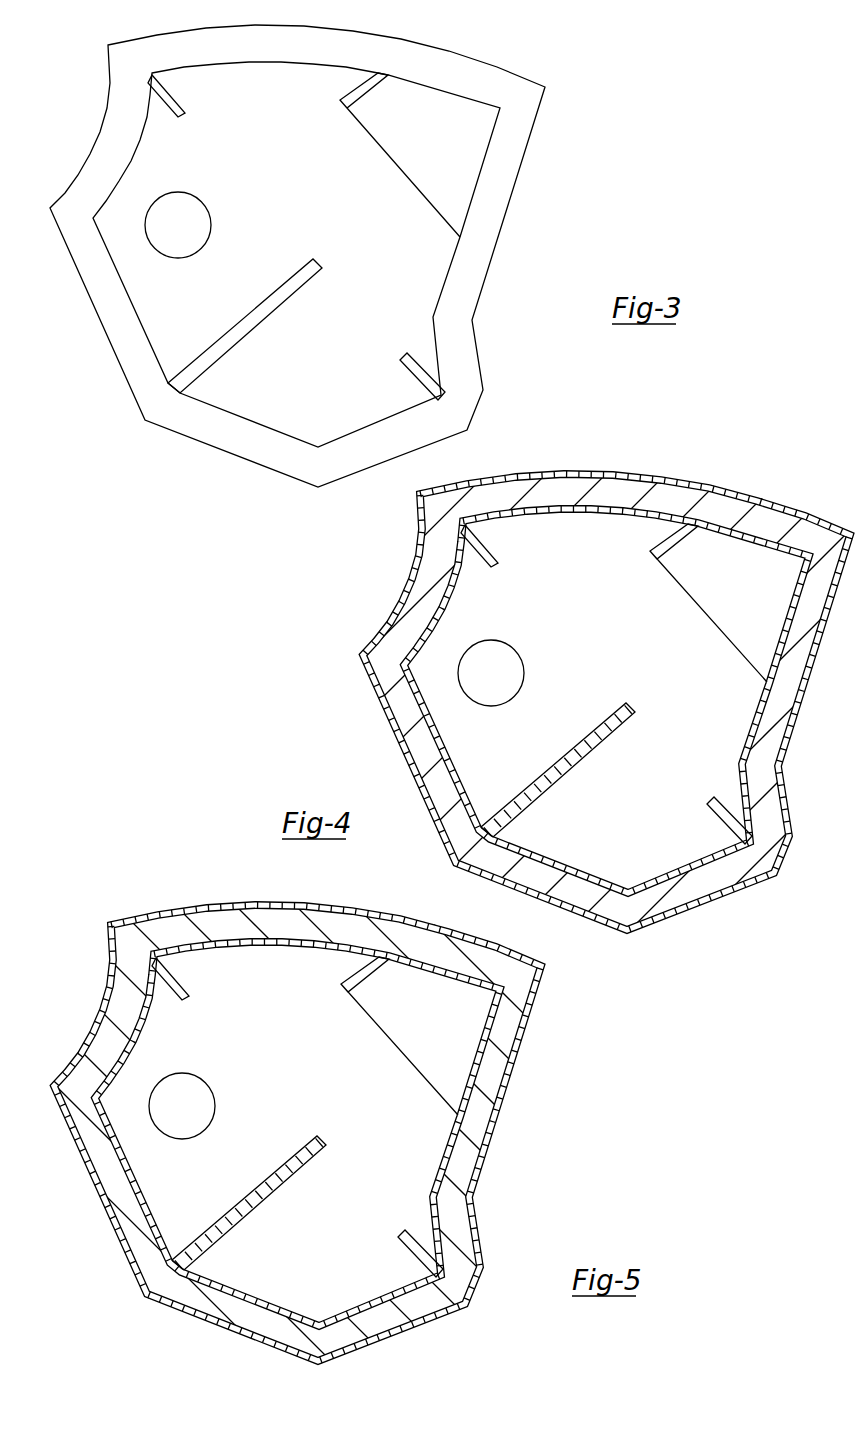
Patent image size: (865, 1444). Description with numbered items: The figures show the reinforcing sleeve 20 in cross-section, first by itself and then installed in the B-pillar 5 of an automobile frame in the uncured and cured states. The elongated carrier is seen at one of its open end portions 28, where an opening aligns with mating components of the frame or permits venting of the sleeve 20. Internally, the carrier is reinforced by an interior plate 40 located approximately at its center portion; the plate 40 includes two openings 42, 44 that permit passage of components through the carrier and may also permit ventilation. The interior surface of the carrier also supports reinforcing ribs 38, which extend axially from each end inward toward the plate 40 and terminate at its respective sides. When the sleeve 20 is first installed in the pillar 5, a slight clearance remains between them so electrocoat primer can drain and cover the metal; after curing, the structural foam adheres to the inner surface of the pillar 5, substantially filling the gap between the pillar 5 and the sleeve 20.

In FIG. 4, the B-pillar 5 is at (614, 478).
In FIG. 5, the B-pillar 5 is at (388, 912).
In FIG. 4, the sleeve 20 is at (698, 520).
In FIG. 5, the sleeve 20 is at (177, 943).
In FIG. 3, the end portion 28 is at (463, 53).
In FIG. 3, the reinforcing ribs 38 is at (167, 90).
In FIG. 4, the reinforcing ribs 38 is at (494, 550).
In FIG. 5, the reinforcing ribs 38 is at (175, 975).
In FIG. 3, the interior plate 40 is at (331, 219).
In FIG. 3, the opening 42 is at (461, 144).
In FIG. 4, the opening 42 is at (744, 597).
In FIG. 5, the opening 42 is at (437, 1029).
In FIG. 3, the opening 44 is at (207, 250).
In FIG. 4, the opening 44 is at (519, 697).
In FIG. 5, the opening 44 is at (210, 1130).